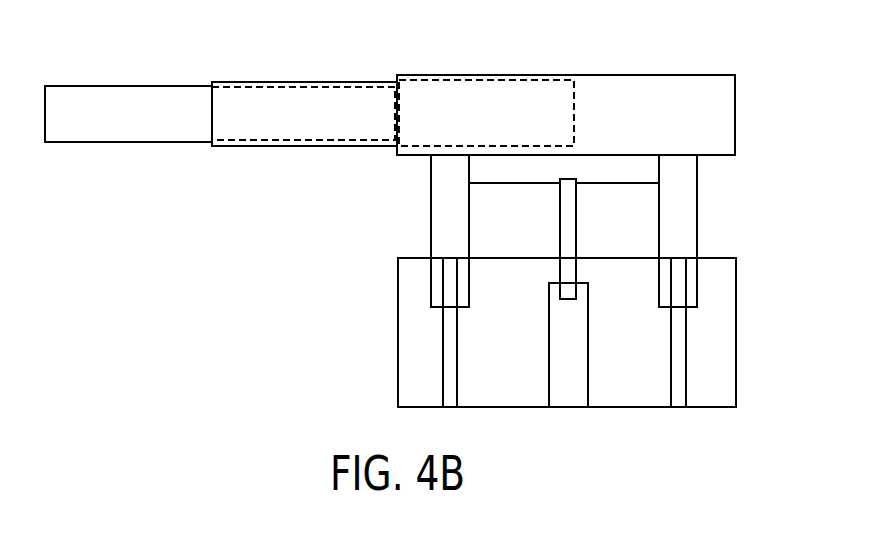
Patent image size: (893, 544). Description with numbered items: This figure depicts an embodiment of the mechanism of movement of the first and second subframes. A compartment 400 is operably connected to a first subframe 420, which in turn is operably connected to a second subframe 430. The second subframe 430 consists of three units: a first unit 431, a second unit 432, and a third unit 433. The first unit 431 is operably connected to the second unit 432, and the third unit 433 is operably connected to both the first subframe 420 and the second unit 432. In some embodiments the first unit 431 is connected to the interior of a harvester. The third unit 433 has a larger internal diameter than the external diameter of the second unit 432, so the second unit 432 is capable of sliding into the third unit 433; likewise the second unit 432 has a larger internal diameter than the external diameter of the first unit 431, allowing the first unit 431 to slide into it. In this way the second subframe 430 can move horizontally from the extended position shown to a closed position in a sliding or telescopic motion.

The compartment 400 is at (397, 336).
The first subframe 420 is at (748, 160).
The second subframe 430 is at (751, 27).
The first unit 431 is at (135, 100).
The second unit 432 is at (421, 95).
The third unit 433 is at (622, 75).